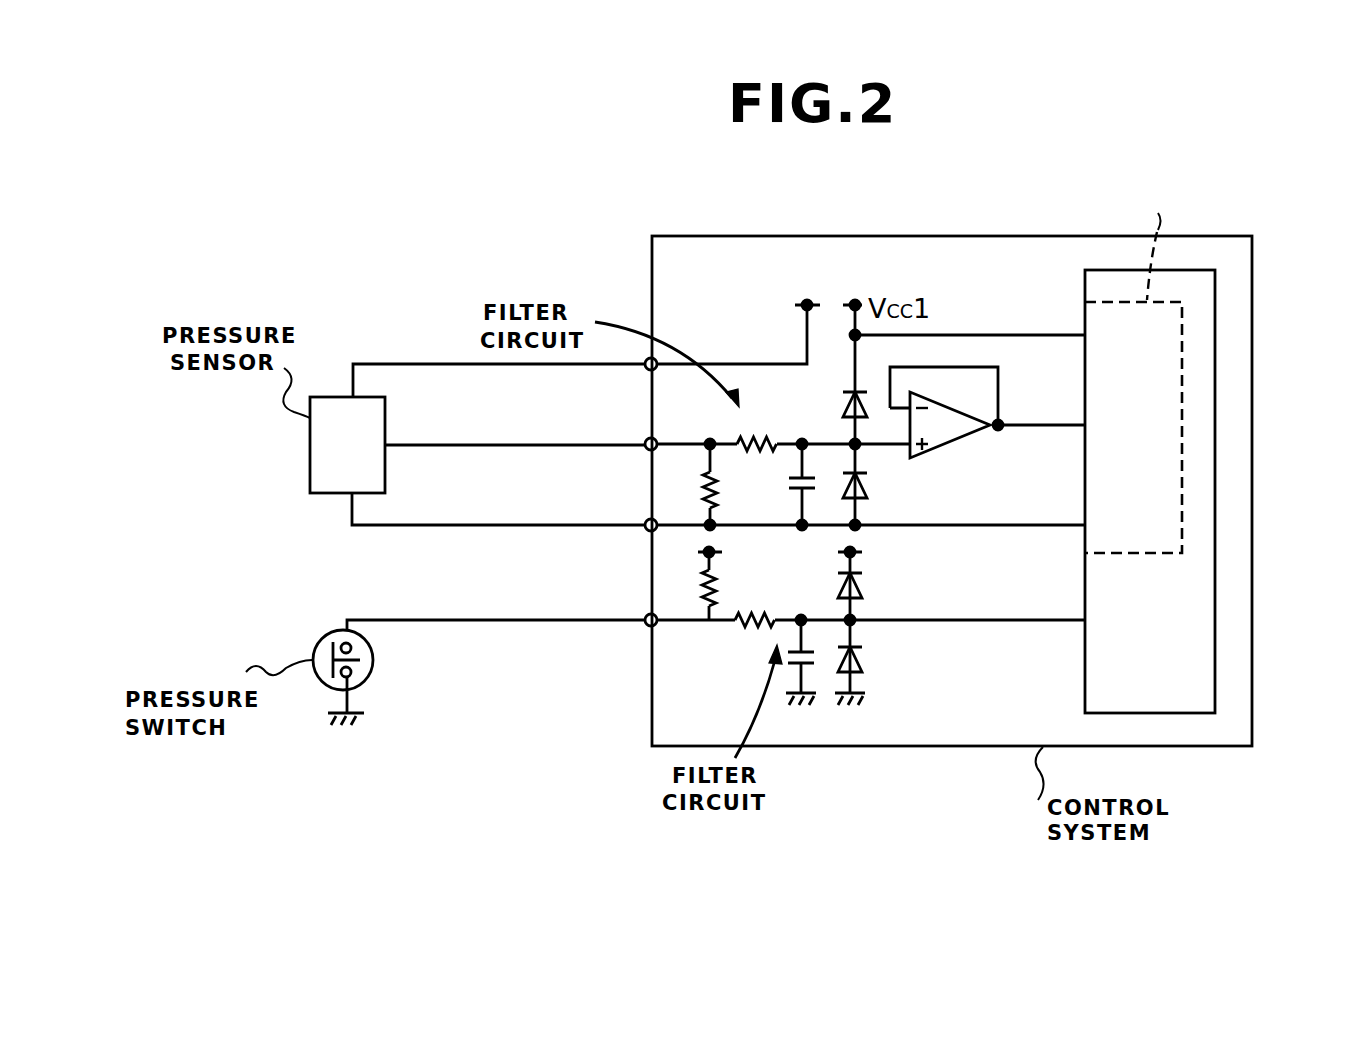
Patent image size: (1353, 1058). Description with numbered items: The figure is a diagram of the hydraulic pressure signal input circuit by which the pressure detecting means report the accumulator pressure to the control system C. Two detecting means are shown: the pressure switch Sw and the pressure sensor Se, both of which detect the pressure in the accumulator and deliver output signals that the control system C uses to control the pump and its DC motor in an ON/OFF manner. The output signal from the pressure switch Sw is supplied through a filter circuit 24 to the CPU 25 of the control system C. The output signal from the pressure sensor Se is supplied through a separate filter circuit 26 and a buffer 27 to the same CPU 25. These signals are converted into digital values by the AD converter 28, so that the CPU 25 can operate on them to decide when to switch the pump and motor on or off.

The filter circuit 24 is at (765, 642).
The CPU 25 is at (1084, 680).
The filter circuit 26 is at (779, 398).
The buffer 27 is at (946, 448).
The AD converter 28 is at (1102, 462).
The control system C is at (946, 748).
The pressure sensor Se is at (386, 425).
The pressure switch Sw is at (374, 661).